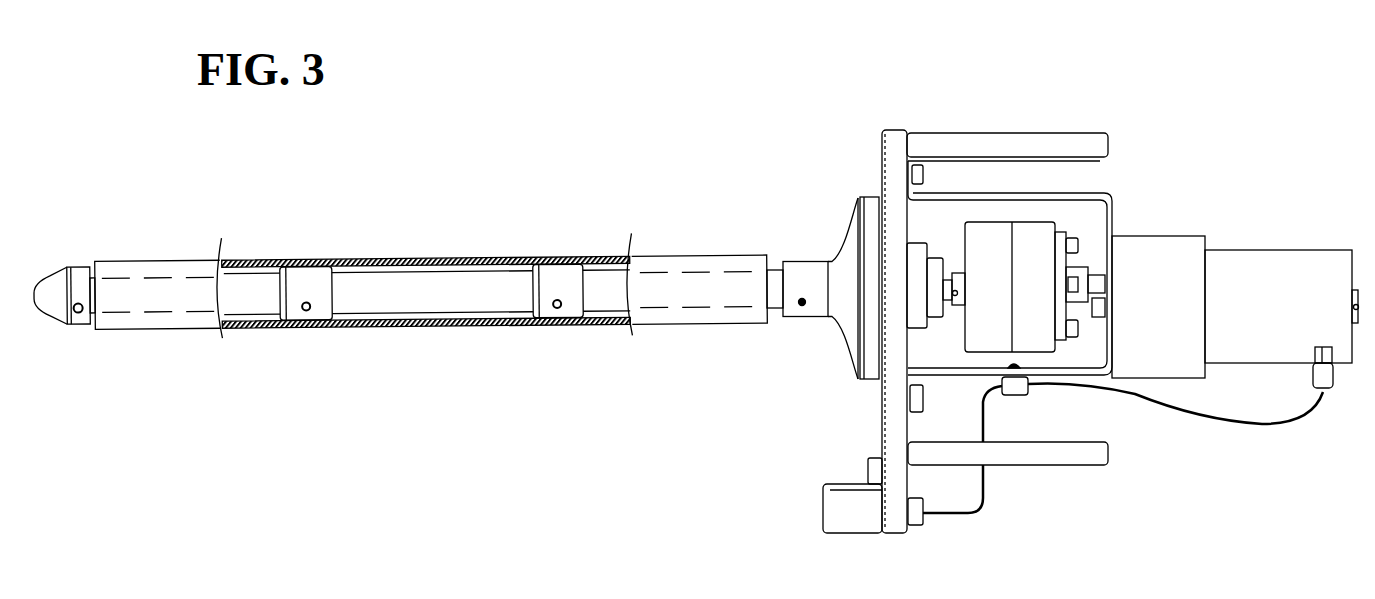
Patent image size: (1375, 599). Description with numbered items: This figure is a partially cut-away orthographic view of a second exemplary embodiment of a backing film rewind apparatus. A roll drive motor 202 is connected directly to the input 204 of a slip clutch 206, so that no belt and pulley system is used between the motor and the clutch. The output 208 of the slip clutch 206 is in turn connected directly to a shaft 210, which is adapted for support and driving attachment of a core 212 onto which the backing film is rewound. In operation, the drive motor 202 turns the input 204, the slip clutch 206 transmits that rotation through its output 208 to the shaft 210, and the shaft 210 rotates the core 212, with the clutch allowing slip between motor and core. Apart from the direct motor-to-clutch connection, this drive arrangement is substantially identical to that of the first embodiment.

The roll drive motor 202 is at (1287, 265).
The input of the slip clutch 204 is at (1098, 280).
The slip clutch 206 is at (1032, 235).
The output of the slip clutch 208 is at (955, 273).
The shaft 210 is at (498, 280).
The core 212 is at (403, 330).